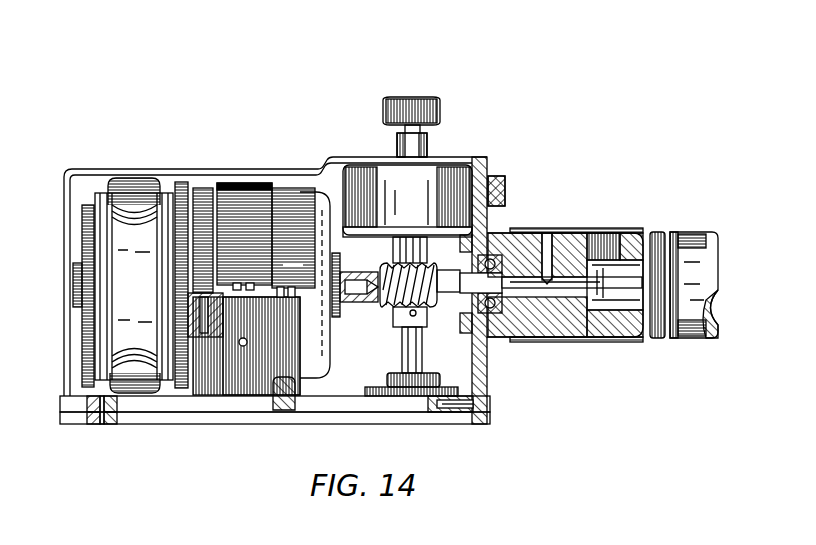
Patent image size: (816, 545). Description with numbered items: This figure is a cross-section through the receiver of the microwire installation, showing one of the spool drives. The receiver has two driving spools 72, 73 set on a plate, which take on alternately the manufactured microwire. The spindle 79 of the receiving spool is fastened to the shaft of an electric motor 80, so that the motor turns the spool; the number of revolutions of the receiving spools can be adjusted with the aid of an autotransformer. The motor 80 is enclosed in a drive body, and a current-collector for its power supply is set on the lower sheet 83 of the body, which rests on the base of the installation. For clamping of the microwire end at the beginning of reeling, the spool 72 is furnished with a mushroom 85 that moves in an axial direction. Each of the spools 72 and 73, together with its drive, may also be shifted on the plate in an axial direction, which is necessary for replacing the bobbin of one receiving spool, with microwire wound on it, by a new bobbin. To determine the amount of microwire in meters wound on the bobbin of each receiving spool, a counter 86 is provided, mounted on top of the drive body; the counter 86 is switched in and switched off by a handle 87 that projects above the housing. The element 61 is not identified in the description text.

The base plate 61 is at (78, 405).
The lower sheet 83 is at (183, 400).
The electric motor 80 is at (283, 223).
The counter 86 is at (393, 190).
The handle 87 is at (442, 110).
The spindle 79 is at (512, 280).
The driving spool 72 is at (545, 228).
The mushroom 85 is at (656, 232).
The driving spool 73 is at (692, 250).